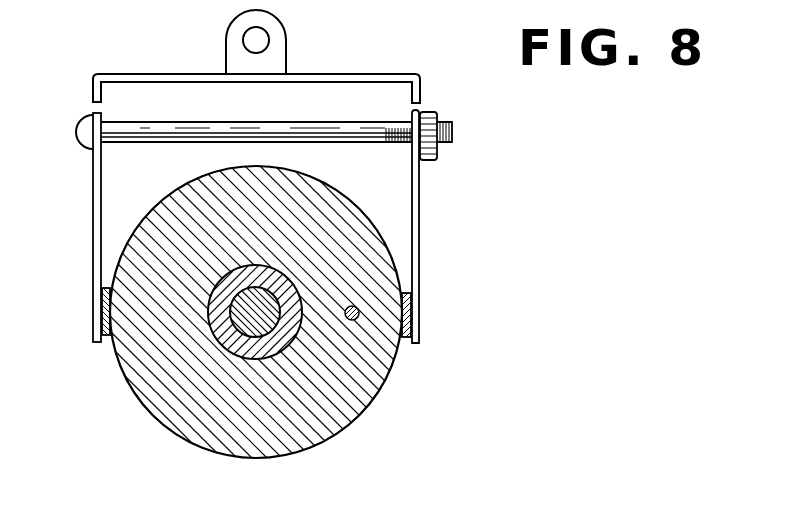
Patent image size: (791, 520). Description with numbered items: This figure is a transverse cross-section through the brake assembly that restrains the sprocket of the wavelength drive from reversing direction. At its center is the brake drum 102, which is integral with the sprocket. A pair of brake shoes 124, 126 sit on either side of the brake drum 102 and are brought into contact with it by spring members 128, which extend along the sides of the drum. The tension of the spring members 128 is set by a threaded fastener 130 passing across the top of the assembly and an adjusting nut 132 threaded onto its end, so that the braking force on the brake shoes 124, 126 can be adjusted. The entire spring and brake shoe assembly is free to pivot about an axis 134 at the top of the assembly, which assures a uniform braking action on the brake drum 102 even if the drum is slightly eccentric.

The brake drum 102 is at (205, 435).
The brake shoe 124 is at (107, 338).
The brake shoe 126 is at (404, 340).
The spring members 128 is at (92, 214).
The threaded fastener 130 is at (145, 128).
The adjusting nut 132 is at (434, 158).
The axis 134 is at (269, 40).